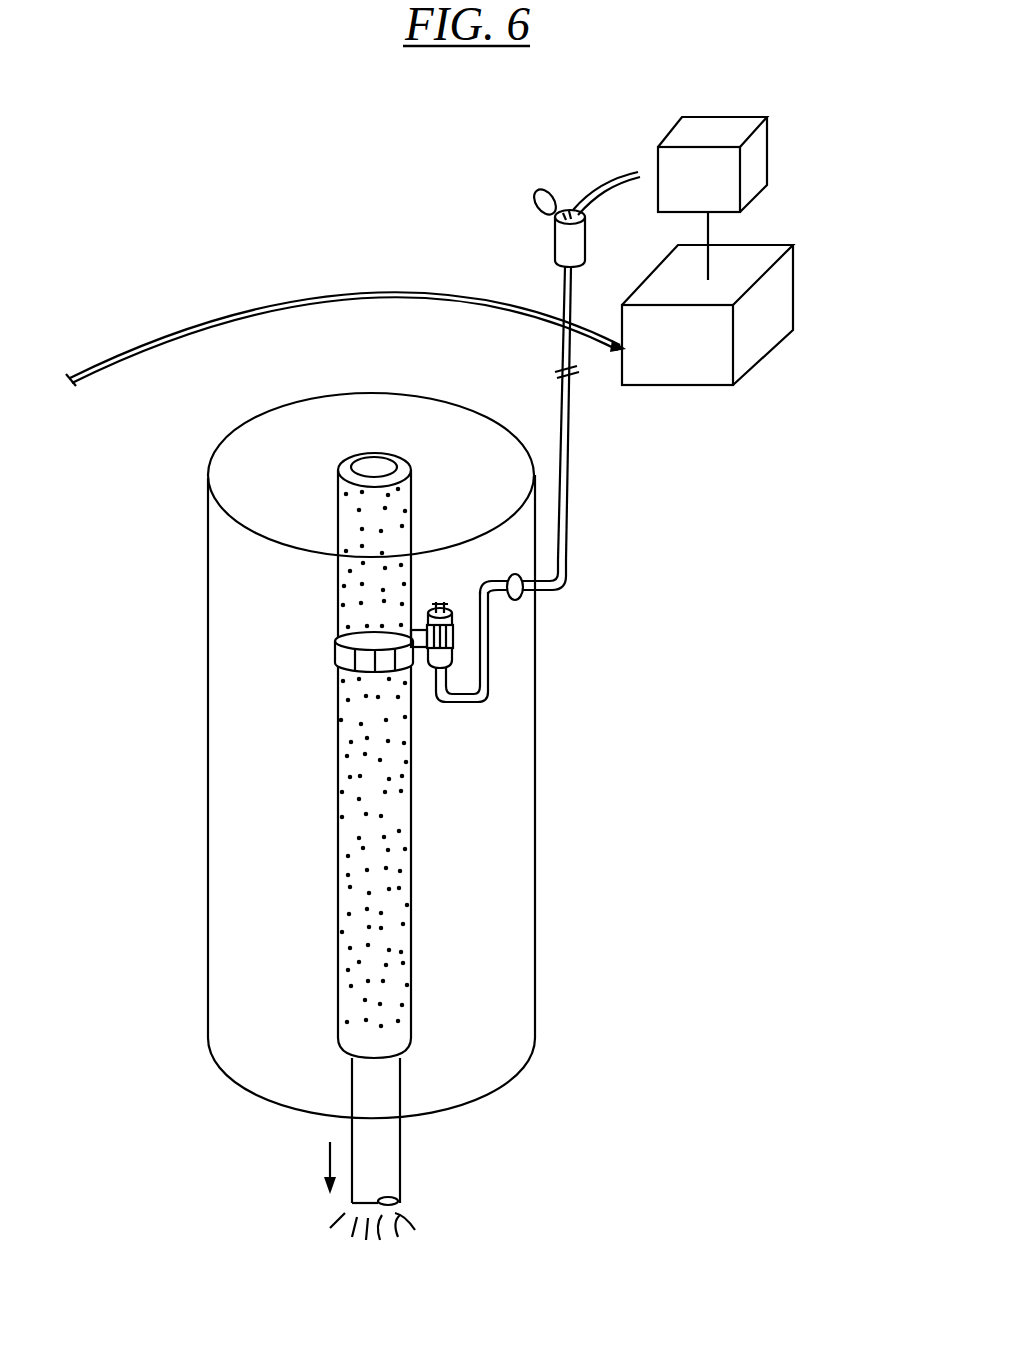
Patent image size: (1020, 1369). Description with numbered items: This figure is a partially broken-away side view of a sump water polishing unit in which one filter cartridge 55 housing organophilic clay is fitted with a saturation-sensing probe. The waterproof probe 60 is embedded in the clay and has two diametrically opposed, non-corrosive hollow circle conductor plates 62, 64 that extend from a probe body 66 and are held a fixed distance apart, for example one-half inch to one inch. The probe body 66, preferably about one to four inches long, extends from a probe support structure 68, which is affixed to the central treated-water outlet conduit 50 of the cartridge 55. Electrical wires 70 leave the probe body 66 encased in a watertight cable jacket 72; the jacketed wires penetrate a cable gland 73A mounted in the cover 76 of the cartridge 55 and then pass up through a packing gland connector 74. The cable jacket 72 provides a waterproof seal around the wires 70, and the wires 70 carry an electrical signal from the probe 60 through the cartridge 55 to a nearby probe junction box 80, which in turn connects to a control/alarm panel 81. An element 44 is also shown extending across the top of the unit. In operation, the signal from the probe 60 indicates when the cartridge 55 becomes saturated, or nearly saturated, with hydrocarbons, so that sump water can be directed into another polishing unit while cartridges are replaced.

The support cable 44 is at (127, 328).
The central treated-water outlet conduit 50 is at (398, 735).
The filter cartridge 55 is at (196, 660).
The waterproof probe 60 is at (468, 642).
The hollow circle conductor plate 62 is at (450, 617).
The hollow circle conductor plate 64 is at (455, 606).
The probe body 66 is at (447, 662).
The probe support structure 68 is at (452, 645).
The electrical wires 70 is at (644, 166).
The cable jacket 72 is at (572, 478).
The cable gland 73A is at (512, 574).
The packing gland connector 74 is at (565, 208).
The cover 76 is at (535, 882).
The probe junction box 80 is at (765, 162).
The control/alarm panel 81 is at (760, 318).